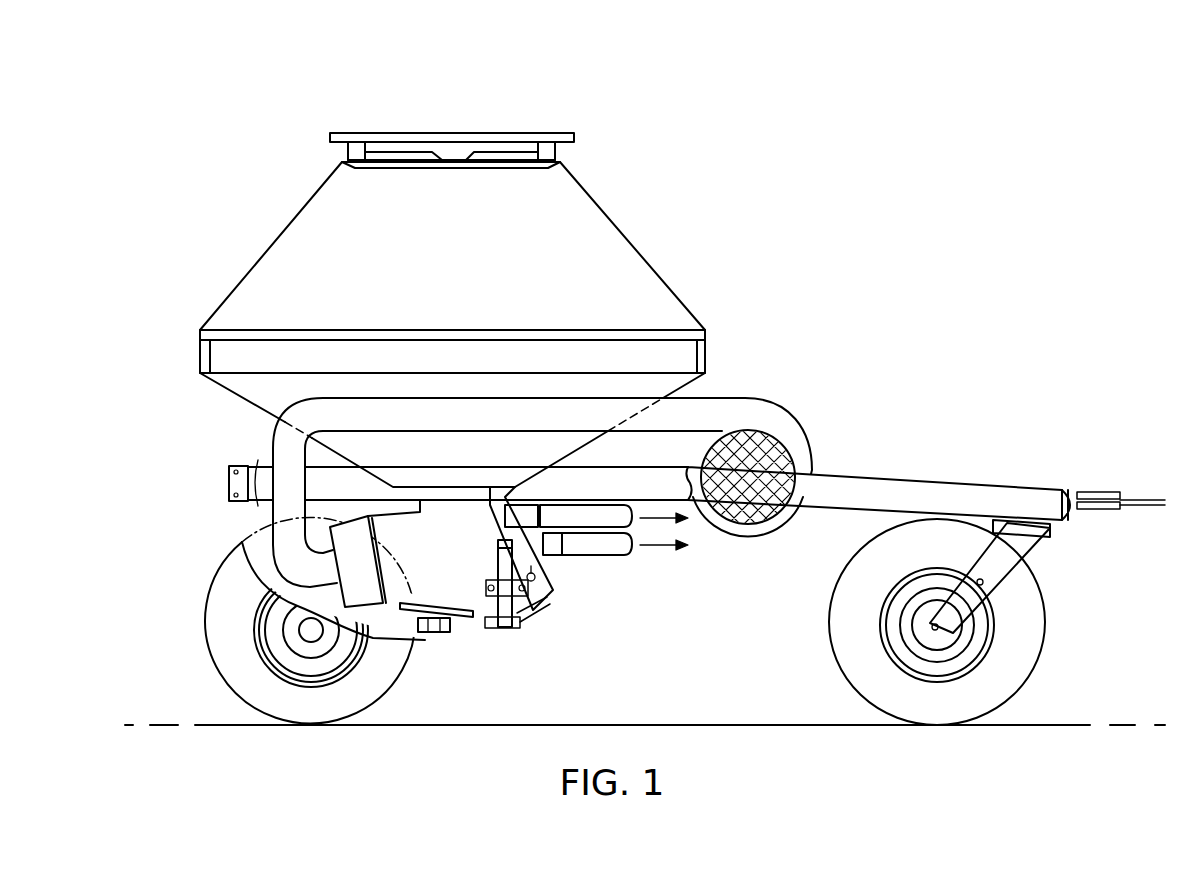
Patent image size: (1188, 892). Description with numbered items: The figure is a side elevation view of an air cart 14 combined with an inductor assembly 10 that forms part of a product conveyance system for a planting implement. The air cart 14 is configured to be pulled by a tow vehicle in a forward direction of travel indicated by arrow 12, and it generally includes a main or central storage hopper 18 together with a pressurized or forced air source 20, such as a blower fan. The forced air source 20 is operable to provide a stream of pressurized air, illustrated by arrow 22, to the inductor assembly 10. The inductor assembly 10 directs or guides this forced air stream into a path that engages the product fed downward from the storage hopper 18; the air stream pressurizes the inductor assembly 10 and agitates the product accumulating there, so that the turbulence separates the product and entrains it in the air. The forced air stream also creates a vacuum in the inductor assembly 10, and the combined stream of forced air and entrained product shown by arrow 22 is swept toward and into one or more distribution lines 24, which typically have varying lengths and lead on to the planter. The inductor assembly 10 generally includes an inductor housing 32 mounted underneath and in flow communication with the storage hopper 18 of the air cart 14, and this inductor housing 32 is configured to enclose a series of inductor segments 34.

The inductor assembly 10 is at (483, 648).
The forward direction of travel 12 is at (208, 208).
The air cart 14 is at (783, 214).
The storage hopper 18 is at (643, 249).
The forced air source 20 is at (801, 412).
The stream of pressurized air 22 is at (692, 414).
The distribution lines 24 is at (605, 540).
The inductor housing 32 is at (383, 607).
The inductor segments 34 is at (355, 588).